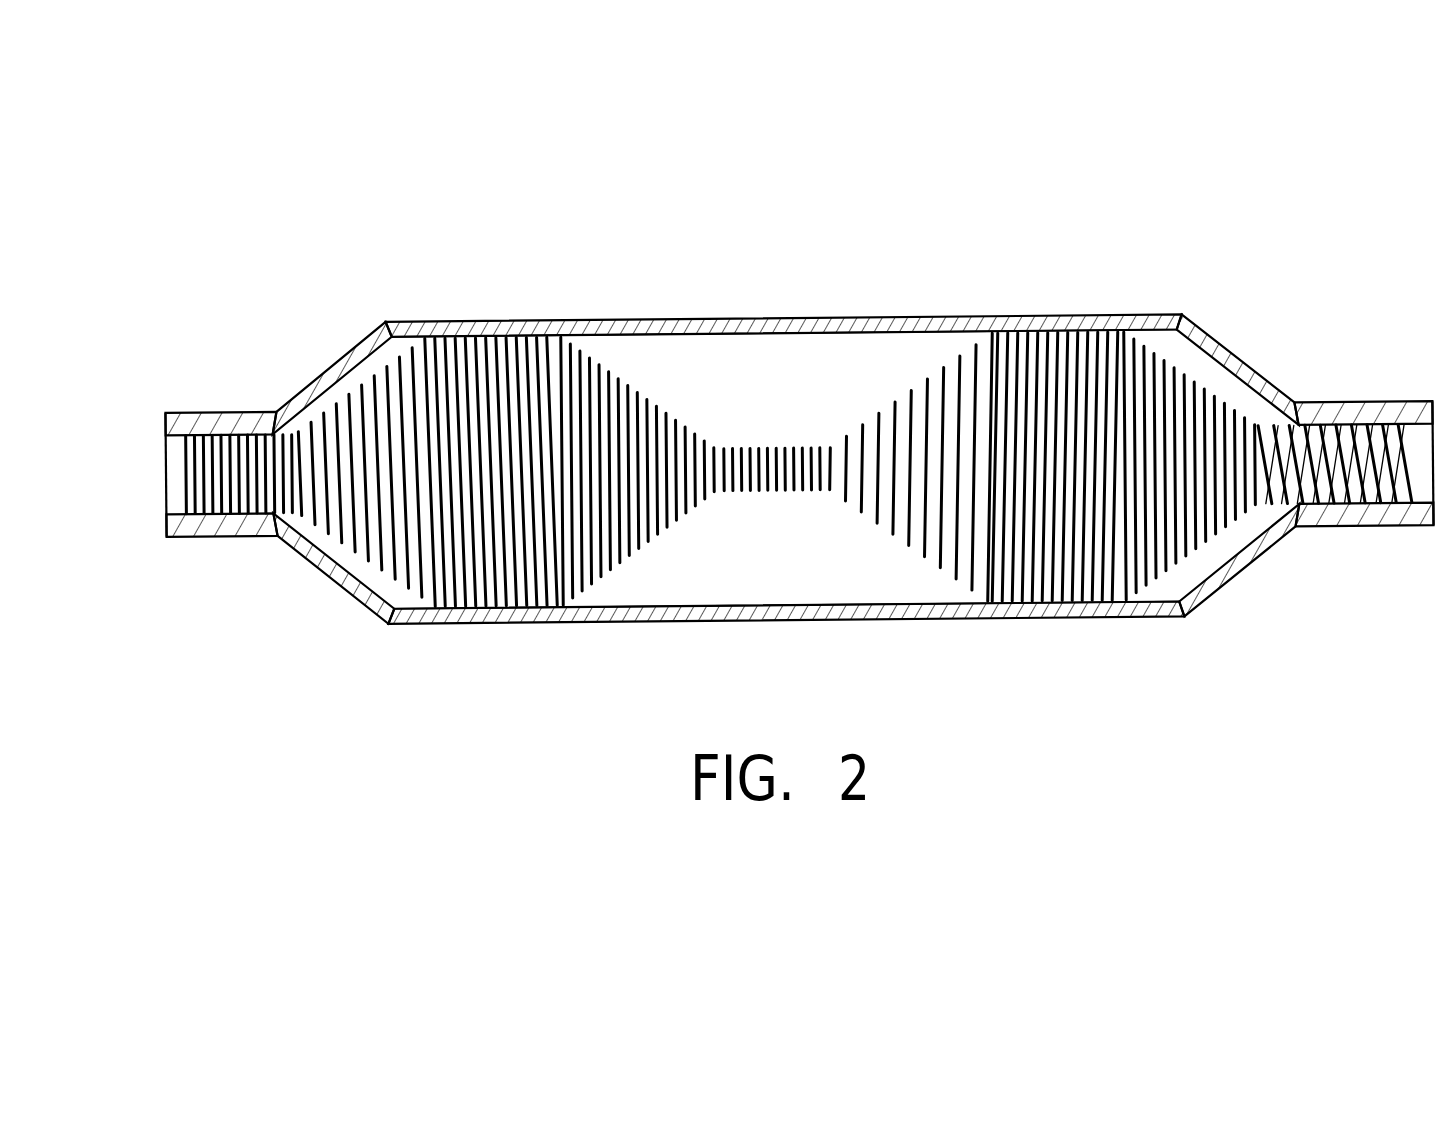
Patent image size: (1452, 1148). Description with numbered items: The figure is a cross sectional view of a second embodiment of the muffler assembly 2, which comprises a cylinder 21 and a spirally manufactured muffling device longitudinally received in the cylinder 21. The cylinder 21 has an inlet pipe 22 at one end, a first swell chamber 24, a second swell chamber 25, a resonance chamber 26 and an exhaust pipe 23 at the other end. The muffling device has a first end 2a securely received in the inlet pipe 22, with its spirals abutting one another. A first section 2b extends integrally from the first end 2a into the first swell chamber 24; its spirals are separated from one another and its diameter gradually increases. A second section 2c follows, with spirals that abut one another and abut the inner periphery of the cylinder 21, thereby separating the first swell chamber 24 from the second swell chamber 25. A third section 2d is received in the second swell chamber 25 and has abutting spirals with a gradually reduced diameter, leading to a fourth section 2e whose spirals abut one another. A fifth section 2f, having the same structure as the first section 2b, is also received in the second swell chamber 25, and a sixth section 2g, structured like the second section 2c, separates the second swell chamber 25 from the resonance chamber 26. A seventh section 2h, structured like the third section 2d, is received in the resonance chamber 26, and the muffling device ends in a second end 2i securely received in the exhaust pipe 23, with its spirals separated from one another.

The muffler assembly 2 is at (801, 460).
The first end 2a is at (230, 470).
The first section 2b is at (357, 547).
The second section 2c is at (513, 580).
The third section 2d is at (640, 553).
The fourth section 2e is at (775, 493).
The fifth section 2f is at (927, 553).
The sixth section 2g is at (1055, 567).
The seventh section 2h is at (1182, 520).
The second end 2i is at (1355, 438).
The cylinder 21 is at (597, 333).
The inlet pipe 22 is at (180, 473).
The exhaust pipe 23 is at (1422, 480).
The first swell chamber 24 is at (372, 378).
The second swell chamber 25 is at (858, 370).
The resonance chamber 26 is at (1238, 408).